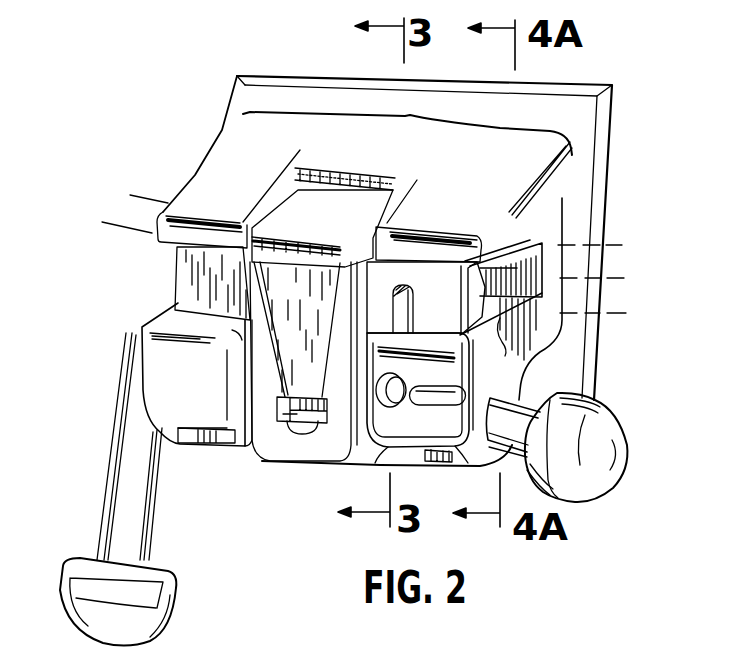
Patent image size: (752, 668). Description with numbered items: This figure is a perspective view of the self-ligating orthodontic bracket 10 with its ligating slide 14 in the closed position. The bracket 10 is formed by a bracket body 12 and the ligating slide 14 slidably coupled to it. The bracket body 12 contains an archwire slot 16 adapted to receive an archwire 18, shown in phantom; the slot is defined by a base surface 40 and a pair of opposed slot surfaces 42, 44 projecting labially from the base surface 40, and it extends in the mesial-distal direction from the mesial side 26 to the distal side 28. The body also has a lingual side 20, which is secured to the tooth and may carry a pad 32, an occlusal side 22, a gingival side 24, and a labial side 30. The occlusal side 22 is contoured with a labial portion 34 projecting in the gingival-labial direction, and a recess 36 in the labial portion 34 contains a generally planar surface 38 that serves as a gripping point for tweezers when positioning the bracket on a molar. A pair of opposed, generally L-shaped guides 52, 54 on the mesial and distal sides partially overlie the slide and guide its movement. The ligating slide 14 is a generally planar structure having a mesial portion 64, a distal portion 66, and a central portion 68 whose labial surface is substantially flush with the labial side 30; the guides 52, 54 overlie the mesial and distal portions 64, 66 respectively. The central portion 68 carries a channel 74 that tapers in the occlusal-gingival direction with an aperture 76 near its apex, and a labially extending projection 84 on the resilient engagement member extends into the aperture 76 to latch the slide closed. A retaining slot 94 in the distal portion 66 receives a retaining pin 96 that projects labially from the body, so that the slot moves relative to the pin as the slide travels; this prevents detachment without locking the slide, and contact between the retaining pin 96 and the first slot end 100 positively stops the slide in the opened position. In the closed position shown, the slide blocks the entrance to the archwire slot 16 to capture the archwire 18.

The orthodontic bracket 10 is at (663, 93).
The bracket body 12 is at (549, 203).
The ligating slide 14 is at (198, 285).
The archwire slot 16 is at (528, 286).
The archwire 18 is at (178, 270).
The lingual side 20 is at (610, 110).
The occlusal side 22 is at (246, 136).
The gingival side 24 is at (547, 367).
The mesial side 26 is at (157, 313).
The distal side 28 is at (547, 320).
The labial side 30 is at (202, 386).
The pad 32 is at (289, 70).
The labial portion 34 is at (170, 213).
The recess 36 is at (368, 166).
The planar surface 38 is at (340, 227).
The base surface 40 is at (522, 215).
The slot surface 42 is at (495, 262).
The slot surface 44 is at (499, 344).
The guide 52 is at (157, 412).
The guide 54 is at (425, 420).
The mesial portion 64 is at (219, 456).
The distal portion 66 is at (440, 463).
The central portion 68 is at (326, 466).
The channel 74 is at (315, 318).
The aperture 76 is at (302, 434).
The projection 84 is at (303, 395).
The retaining slot 94 is at (414, 325).
The retaining pin 96 is at (398, 381).
The first slot end 100 is at (410, 278).